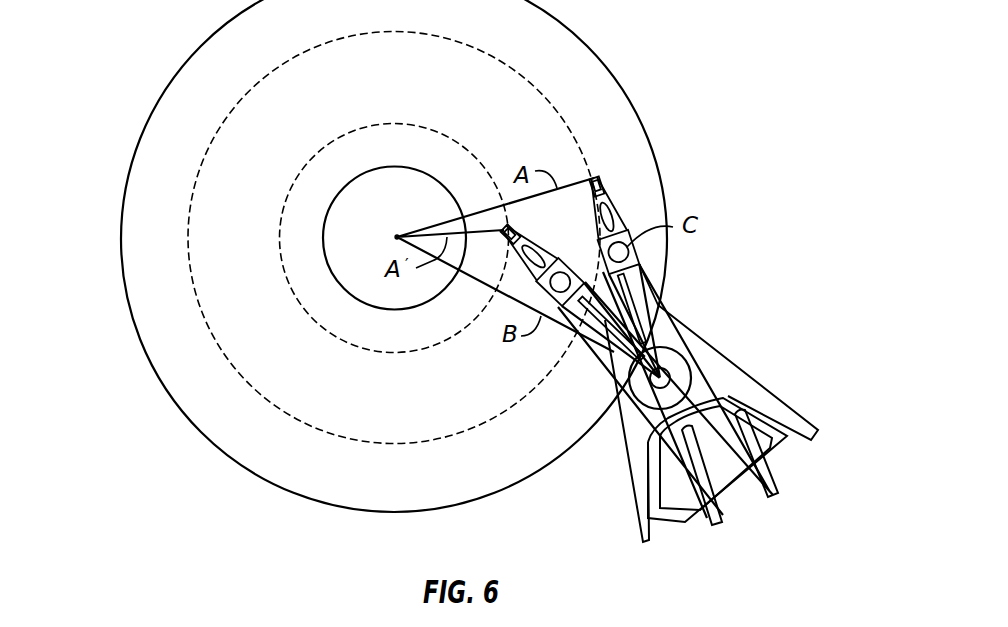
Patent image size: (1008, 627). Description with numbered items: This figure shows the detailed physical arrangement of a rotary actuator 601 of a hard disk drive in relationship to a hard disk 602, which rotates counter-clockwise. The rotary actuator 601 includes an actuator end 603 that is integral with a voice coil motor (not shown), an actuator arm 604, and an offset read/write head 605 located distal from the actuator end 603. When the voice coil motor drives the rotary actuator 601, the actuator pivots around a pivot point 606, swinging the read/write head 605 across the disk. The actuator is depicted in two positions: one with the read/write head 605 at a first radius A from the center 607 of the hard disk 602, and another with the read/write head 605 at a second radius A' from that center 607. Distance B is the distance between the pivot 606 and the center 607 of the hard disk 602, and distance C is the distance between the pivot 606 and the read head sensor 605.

The rotary actuator 601 is at (777, 367).
The hard disk 602 is at (120, 230).
The actuator end 603 is at (797, 482).
The actuator arm 604 is at (677, 292).
The read/write head 605 is at (597, 173).
The pivot point 606 is at (661, 375).
The center of hard disk 607 is at (395, 234).